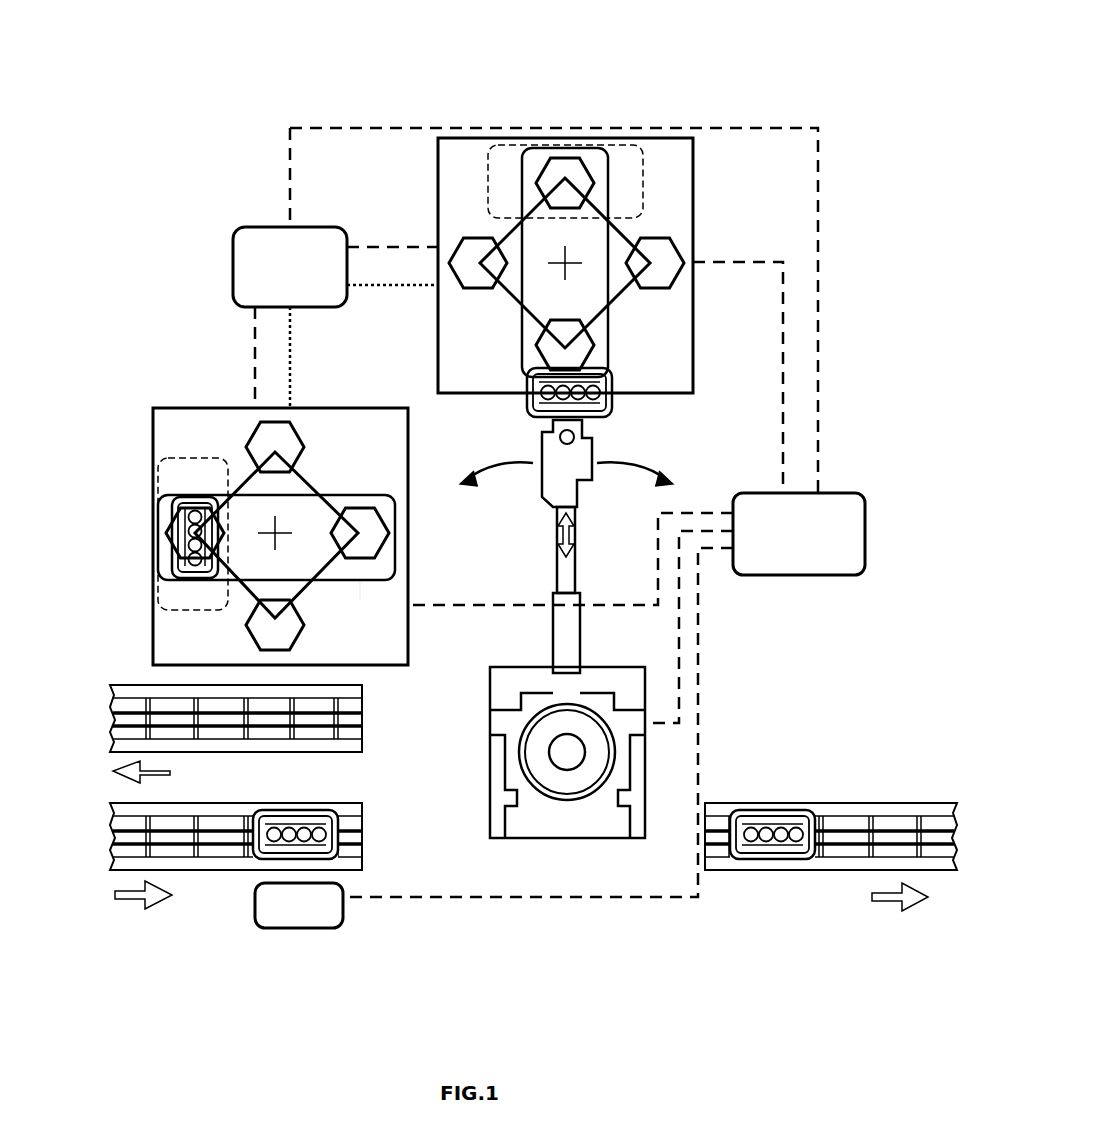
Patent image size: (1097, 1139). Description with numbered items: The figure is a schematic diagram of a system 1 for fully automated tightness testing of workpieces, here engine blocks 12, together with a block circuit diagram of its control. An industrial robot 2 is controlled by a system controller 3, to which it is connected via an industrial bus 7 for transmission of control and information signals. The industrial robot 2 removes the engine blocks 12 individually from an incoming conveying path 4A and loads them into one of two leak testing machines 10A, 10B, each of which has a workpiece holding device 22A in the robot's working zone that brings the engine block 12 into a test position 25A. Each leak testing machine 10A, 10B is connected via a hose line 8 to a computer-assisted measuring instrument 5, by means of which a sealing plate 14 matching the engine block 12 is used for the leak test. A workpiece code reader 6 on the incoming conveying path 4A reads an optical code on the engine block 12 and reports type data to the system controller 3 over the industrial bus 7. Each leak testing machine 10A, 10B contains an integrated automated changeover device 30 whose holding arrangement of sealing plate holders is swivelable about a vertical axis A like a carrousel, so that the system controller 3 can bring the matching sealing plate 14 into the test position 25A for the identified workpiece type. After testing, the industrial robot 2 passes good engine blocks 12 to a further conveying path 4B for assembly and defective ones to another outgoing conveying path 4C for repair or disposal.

The system 1 is at (878, 62).
The industrial robot 2 is at (545, 820).
The system controller 3 is at (799, 534).
The conveying path 4A is at (215, 850).
The further conveying path 4B is at (843, 820).
The outgoing conveying path 4C is at (140, 705).
The measuring instrument 5 is at (233, 262).
The workpiece code reader 6 is at (315, 920).
The industrial bus 7 is at (385, 246).
The hose line 8 is at (378, 286).
The leak testing machine 10A is at (693, 214).
The leak testing machine 10B is at (153, 450).
The engine block 12 is at (158, 568).
The sealing plate 14 is at (545, 162).
The workpiece holding device 22A is at (522, 350).
The test position 25A is at (630, 145).
The changeover device 30 is at (648, 234).
The vertical axis A is at (565, 266).